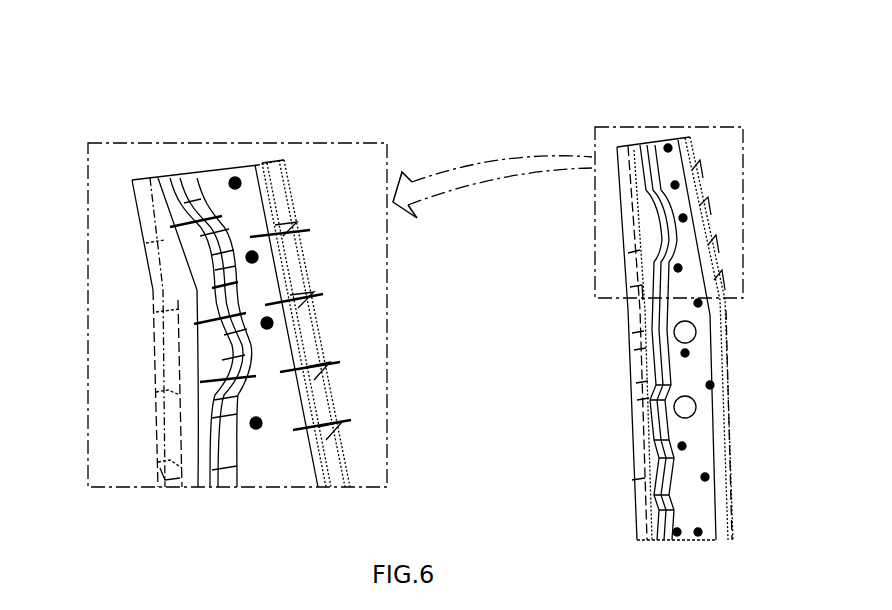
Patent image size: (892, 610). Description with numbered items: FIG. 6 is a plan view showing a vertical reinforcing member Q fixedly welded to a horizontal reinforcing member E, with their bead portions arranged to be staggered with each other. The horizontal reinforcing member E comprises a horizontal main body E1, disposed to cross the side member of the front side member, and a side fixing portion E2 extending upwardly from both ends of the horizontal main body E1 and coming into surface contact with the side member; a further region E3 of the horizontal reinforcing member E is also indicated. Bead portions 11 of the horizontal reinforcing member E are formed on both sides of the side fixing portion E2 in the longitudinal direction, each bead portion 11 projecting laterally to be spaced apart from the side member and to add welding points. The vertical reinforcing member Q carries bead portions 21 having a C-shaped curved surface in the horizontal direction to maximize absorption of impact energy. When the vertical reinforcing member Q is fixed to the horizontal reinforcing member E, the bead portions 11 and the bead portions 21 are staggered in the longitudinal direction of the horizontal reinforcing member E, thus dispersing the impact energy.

The bead portion 11 is at (292, 265).
The bead portion 21 is at (217, 247).
The horizontal reinforcing member E is at (723, 272).
The horizontal main body E1 is at (254, 175).
The side fixing portion E2 is at (142, 215).
The zone E3 is at (292, 200).
The vertical reinforcing member Q is at (705, 369).